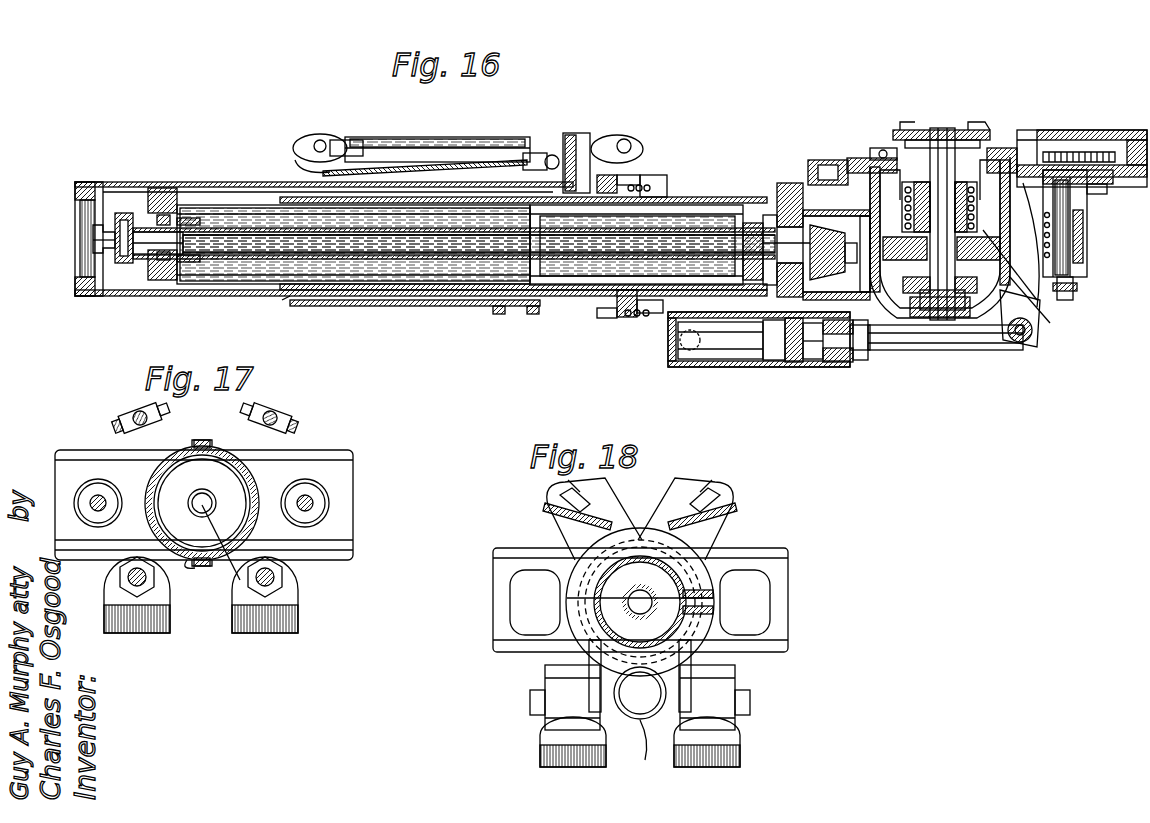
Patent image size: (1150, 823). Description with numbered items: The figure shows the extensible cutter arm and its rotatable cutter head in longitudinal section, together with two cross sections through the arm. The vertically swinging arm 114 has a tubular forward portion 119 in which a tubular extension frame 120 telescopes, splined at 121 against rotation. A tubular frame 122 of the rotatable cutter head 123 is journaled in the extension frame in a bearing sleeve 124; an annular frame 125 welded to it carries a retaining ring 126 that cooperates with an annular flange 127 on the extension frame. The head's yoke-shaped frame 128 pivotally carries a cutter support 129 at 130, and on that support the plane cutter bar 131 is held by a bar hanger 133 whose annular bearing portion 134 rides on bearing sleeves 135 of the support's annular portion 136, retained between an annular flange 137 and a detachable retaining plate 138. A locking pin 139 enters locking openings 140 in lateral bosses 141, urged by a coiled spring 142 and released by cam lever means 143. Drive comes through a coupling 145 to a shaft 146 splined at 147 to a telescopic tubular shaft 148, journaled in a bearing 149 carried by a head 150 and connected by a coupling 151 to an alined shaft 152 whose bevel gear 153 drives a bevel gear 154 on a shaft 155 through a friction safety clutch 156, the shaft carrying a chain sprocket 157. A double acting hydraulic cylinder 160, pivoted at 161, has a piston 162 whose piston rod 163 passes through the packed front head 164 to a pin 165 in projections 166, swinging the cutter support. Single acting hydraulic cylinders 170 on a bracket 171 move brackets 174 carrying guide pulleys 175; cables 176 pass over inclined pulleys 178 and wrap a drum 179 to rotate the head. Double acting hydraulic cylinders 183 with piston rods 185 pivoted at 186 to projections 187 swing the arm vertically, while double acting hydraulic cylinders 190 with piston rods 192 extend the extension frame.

In FIG. 17, the vertically swinging arm 114 is at (345, 455).
In FIG. 18, the vertically swinging arm 114 is at (775, 556).
In FIG. 16, the tubular forward portion 119 is at (288, 297).
In FIG. 17, the tubular forward portion 119 is at (250, 470).
In FIG. 16, the tubular extension frame 120 is at (565, 300).
In FIG. 17, the tubular extension frame 120 is at (210, 565).
In FIG. 16, the spline 121 is at (432, 308).
In FIG. 17, the spline 121 is at (200, 566).
In FIG. 16, the tubular frame 122 is at (680, 203).
In FIG. 18, the tubular frame 122 is at (710, 608).
In FIG. 16, the rotatable cutter head 123 is at (783, 183).
In FIG. 16, the bearing sleeve 124 is at (566, 140).
In FIG. 16, the annular frame 125 is at (630, 185).
In FIG. 18, the annular frame 125 is at (642, 540).
In FIG. 16, the retaining ring 126 is at (605, 318).
In FIG. 16, the annular flange 127 is at (625, 320).
In FIG. 16, the yoke-shaped frame 128 is at (835, 362).
In FIG. 16, the cutter support 129 is at (1030, 305).
In FIG. 16, the pivot 130 is at (940, 318).
In FIG. 16, the plane cutter bar 131 is at (1125, 135).
In FIG. 16, the bar hanger 133 is at (1058, 150).
In FIG. 16, the annular bearing portion 134 is at (868, 158).
In FIG. 16, the bearing sleeves 135 is at (912, 182).
In FIG. 16, the annular portion 136 is at (985, 237).
In FIG. 16, the annular flange 137 is at (868, 210).
In FIG. 16, the detachable retaining plate 138 is at (870, 148).
In FIG. 16, the locking pin 139 is at (1085, 215).
In FIG. 16, the locking openings 140 is at (1080, 184).
In FIG. 16, the lateral bosses 141 is at (808, 210).
In FIG. 16, the coiled spring 142 is at (1083, 250).
In FIG. 16, the cam lever means 143 is at (1073, 288).
In FIG. 16, the coupling 145 is at (120, 225).
In FIG. 16, the shaft 146 is at (133, 230).
In FIG. 17, the shaft 146 is at (215, 505).
In FIG. 16, the spline 147 is at (178, 232).
In FIG. 16, the telescopic tubular shaft 148 is at (240, 228).
In FIG. 17, the telescopic tubular shaft 148 is at (230, 560).
In FIG. 18, the telescopic tubular shaft 148 is at (630, 610).
In FIG. 16, the bearing 149 is at (160, 280).
In FIG. 16, the head 150 is at (150, 290).
In FIG. 16, the coupling 151 is at (768, 215).
In FIG. 16, the alined shaft 152 is at (815, 272).
In FIG. 16, the bevel gear 153 is at (820, 340).
In FIG. 16, the bevel gear 154 is at (1037, 295).
In FIG. 16, the shaft 155 is at (920, 300).
In FIG. 16, the friction safety clutch 156 is at (935, 128).
In FIG. 16, the chain sprocket 157 is at (950, 127).
In FIG. 16, the double acting hydraulic cylinder 160 is at (722, 367).
In FIG. 18, the double acting hydraulic cylinder 160 is at (645, 760).
In FIG. 16, the pivot 161 is at (672, 372).
In FIG. 18, the pivot 161 is at (668, 700).
In FIG. 16, the piston 162 is at (800, 350).
In FIG. 16, the piston rod 163 is at (975, 350).
In FIG. 16, the packed front head 164 is at (862, 362).
In FIG. 16, the pin 165 is at (1027, 347).
In FIG. 16, the projections 166 is at (1015, 342).
In FIG. 16, the single acting hydraulic cylinders 170 is at (455, 137).
In FIG. 16, the bracket 171 is at (590, 142).
In FIG. 18, the bracket 171 is at (712, 483).
In FIG. 16, the bracket 174 is at (325, 143).
In FIG. 17, the bracket 174 is at (245, 410).
In FIG. 16, the guide pulley 175 is at (305, 143).
In FIG. 17, the guide pulley 175 is at (122, 405).
In FIG. 18, the guide pulley 175 is at (640, 519).
In FIG. 16, the cables 176 is at (362, 152).
In FIG. 17, the cables 176 is at (118, 412).
In FIG. 18, the cables 176 is at (545, 507).
In FIG. 16, the inclined pulleys 178 is at (645, 148).
In FIG. 18, the inclined pulleys 178 is at (562, 497).
In FIG. 16, the drum 179 is at (650, 185).
In FIG. 18, the drum 179 is at (690, 562).
In FIG. 17, the double acting hydraulic cylinders 183 is at (295, 620).
In FIG. 18, the double acting hydraulic cylinders 183 is at (545, 755).
In FIG. 17, the piston rod 185 is at (275, 578).
In FIG. 18, the pivotal connection 186 is at (560, 700).
In FIG. 18, the projections 187 is at (590, 665).
In FIG. 17, the double acting hydraulic cylinders 190 is at (80, 485).
In FIG. 18, the double acting hydraulic cylinders 190 is at (515, 585).
In FIG. 17, the piston rod 192 is at (98, 495).